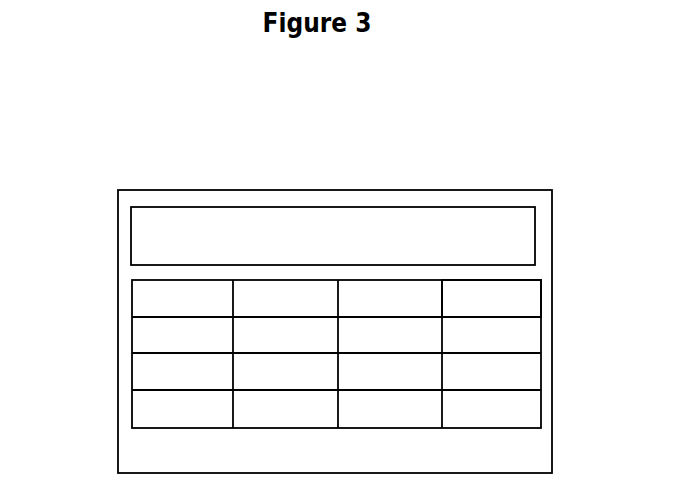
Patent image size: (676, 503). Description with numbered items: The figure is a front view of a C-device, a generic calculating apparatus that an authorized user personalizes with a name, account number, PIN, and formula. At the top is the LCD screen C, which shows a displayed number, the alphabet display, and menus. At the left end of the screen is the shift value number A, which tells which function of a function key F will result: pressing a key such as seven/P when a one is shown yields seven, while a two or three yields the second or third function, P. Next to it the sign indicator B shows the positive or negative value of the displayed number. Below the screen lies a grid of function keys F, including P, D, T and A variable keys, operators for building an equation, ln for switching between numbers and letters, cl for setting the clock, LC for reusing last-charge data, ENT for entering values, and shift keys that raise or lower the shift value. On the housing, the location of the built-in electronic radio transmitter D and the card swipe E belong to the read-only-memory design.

The shift value number A is at (139, 227).
The sign indicator B is at (184, 232).
The LCD screen C is at (337, 206).
The built-in electronic radio transmitter location D is at (384, 323).
The card swipe E is at (515, 448).
The function key F is at (530, 297).